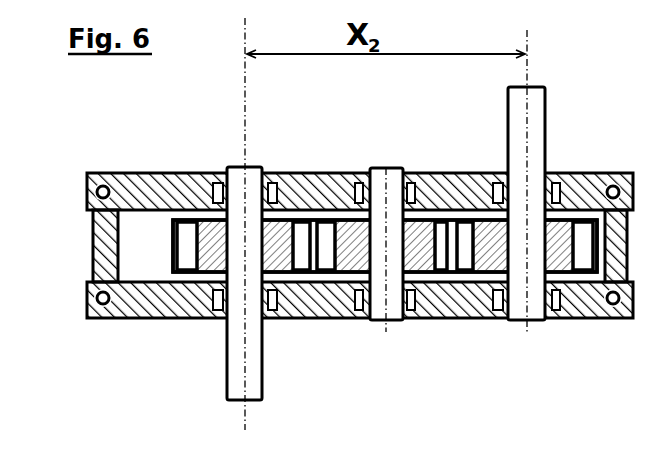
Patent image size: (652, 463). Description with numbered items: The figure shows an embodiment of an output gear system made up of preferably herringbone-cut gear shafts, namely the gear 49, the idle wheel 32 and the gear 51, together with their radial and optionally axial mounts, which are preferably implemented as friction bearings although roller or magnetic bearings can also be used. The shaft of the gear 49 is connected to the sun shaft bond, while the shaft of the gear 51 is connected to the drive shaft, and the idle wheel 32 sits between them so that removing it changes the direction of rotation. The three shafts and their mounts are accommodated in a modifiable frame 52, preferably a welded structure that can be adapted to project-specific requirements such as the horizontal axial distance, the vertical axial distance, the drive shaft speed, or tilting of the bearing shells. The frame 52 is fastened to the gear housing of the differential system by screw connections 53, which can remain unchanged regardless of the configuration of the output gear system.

The idle wheel 32 is at (322, 221).
The gear shaft 49 is at (465, 221).
The gear shaft 51 is at (185, 222).
The frame 52 is at (588, 176).
The screw connections 53 is at (103, 184).